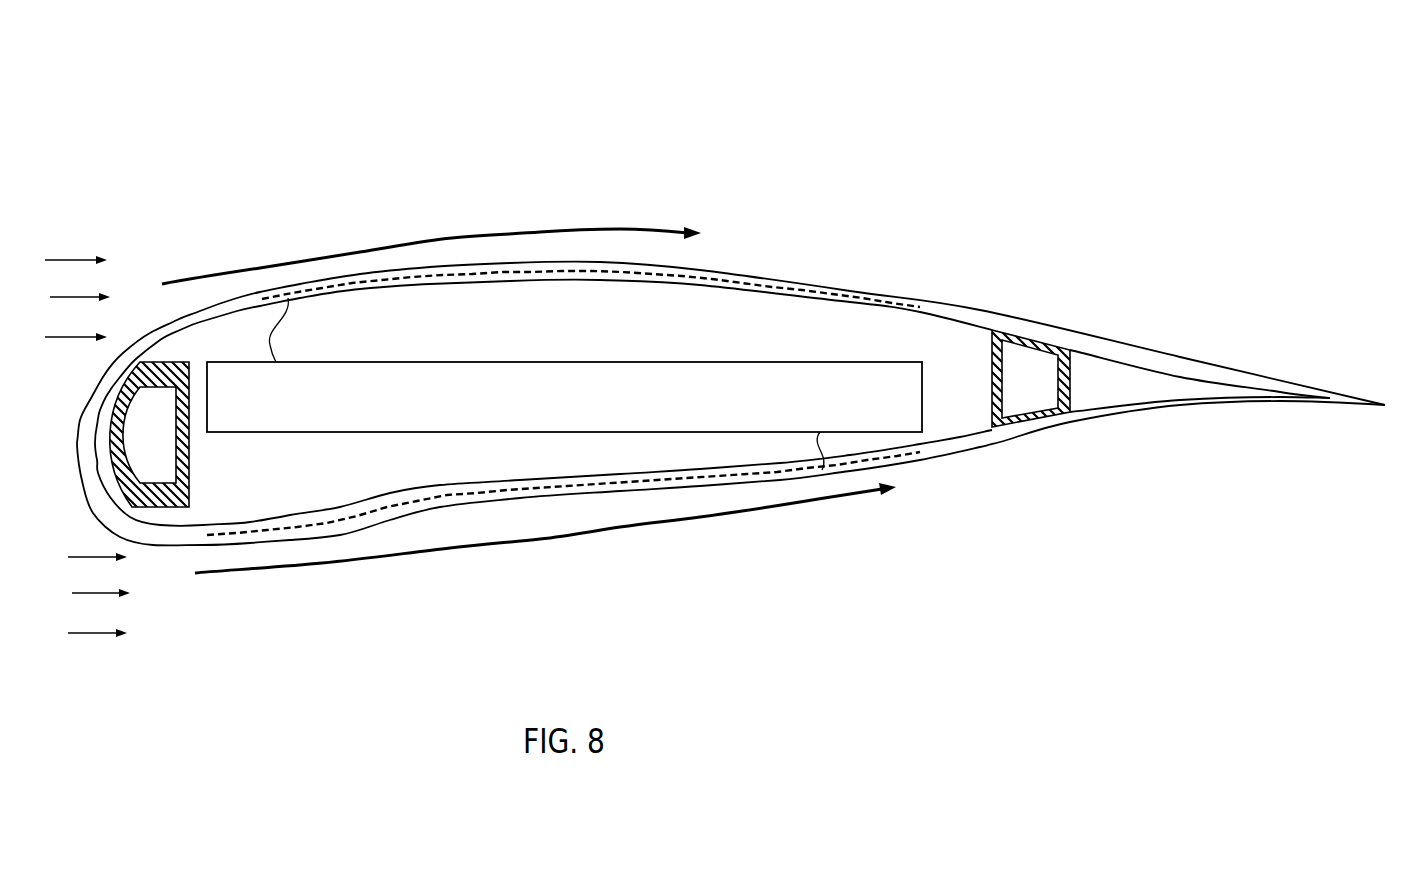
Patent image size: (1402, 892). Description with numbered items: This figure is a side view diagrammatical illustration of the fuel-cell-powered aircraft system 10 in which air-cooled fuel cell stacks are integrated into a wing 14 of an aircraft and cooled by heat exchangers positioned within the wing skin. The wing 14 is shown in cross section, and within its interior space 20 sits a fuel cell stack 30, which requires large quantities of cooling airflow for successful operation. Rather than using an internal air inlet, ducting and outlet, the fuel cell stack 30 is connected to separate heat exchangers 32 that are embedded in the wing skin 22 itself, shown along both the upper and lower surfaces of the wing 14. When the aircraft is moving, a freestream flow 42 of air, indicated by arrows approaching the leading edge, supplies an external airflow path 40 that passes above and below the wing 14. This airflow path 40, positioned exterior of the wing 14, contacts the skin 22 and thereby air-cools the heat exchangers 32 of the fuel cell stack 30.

The fuel-cell-powered aircraft system 10 is at (282, 188).
The wing 14 is at (1107, 333).
The interior space 20 is at (262, 476).
The wing skin 22 is at (1007, 323).
The fuel cell stack 30 is at (514, 410).
The heat exchanger 32 is at (643, 268).
The airflow path 40 is at (453, 231).
The freestream flow 42 is at (15, 311).